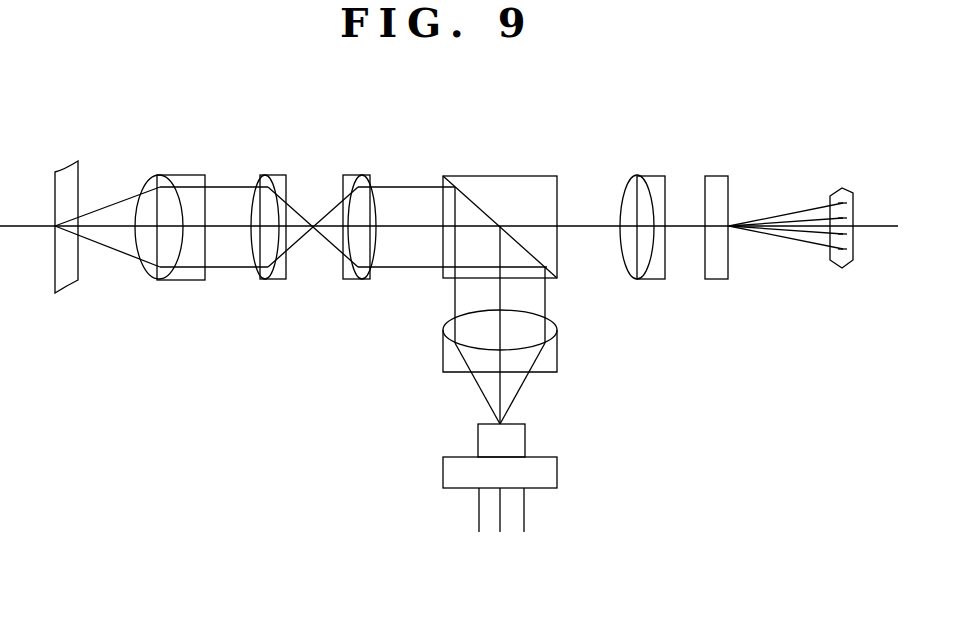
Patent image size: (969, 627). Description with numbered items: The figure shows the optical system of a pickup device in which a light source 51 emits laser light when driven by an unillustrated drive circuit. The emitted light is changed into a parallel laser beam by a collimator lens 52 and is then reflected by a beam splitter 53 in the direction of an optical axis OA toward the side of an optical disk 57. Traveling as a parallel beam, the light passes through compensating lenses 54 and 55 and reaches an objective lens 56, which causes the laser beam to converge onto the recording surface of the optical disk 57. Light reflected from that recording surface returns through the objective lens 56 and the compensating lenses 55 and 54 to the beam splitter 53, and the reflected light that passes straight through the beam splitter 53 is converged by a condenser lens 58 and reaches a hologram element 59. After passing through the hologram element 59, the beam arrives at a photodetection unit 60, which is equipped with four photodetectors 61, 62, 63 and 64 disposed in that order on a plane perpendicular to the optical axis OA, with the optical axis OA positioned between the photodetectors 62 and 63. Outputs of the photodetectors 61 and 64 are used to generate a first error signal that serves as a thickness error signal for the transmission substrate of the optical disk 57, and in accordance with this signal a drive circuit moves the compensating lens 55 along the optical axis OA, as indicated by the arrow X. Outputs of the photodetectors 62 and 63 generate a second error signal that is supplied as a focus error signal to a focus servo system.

The light source 51 is at (557, 470).
The collimator lens 52 is at (557, 322).
The beam splitter 53 is at (487, 176).
The compensating lens 54 is at (352, 176).
The compensating lens 55 is at (273, 176).
The objective lens 56 is at (178, 176).
The optical disk 57 is at (78, 162).
The condenser lens 58 is at (652, 176).
The hologram element 59 is at (711, 176).
The photodetection unit 60 is at (861, 211).
The photodetector 61 is at (847, 204).
The photodetector 62 is at (848, 219).
The photodetector 63 is at (848, 234).
The photodetector 64 is at (848, 250).
The optical axis OA is at (585, 226).